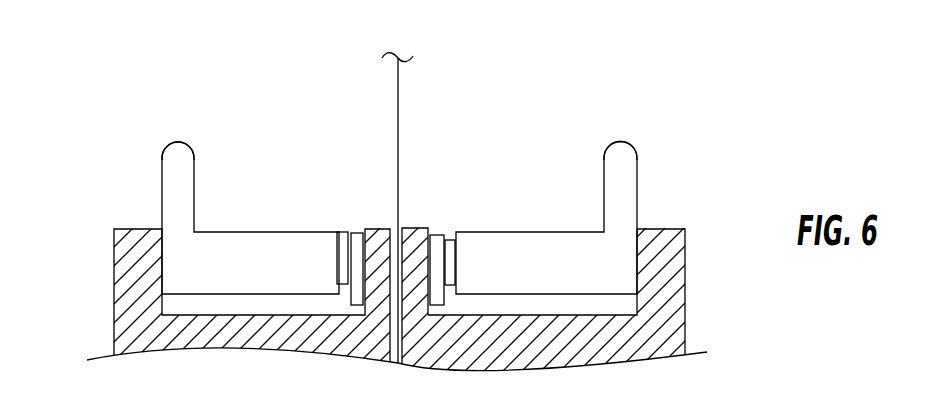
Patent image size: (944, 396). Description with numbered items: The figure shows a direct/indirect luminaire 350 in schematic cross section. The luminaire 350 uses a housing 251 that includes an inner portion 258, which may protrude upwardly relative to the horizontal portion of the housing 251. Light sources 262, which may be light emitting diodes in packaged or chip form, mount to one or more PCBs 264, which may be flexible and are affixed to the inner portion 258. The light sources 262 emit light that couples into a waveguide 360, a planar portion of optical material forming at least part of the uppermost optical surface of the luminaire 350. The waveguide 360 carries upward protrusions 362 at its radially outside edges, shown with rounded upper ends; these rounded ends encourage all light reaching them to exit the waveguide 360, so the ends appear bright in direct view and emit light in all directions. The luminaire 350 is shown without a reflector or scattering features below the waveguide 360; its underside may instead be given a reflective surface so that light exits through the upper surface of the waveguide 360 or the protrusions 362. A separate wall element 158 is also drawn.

The substrate wall 158 is at (397, 100).
The housing 251 is at (122, 300).
The inner portion 258 is at (414, 226).
The light sources 262 is at (345, 255).
The PCBs 264 is at (357, 248).
The direct/indirect luminaire 350 is at (672, 77).
The waveguide 360 is at (255, 245).
The upward protrusions 362 is at (152, 179).